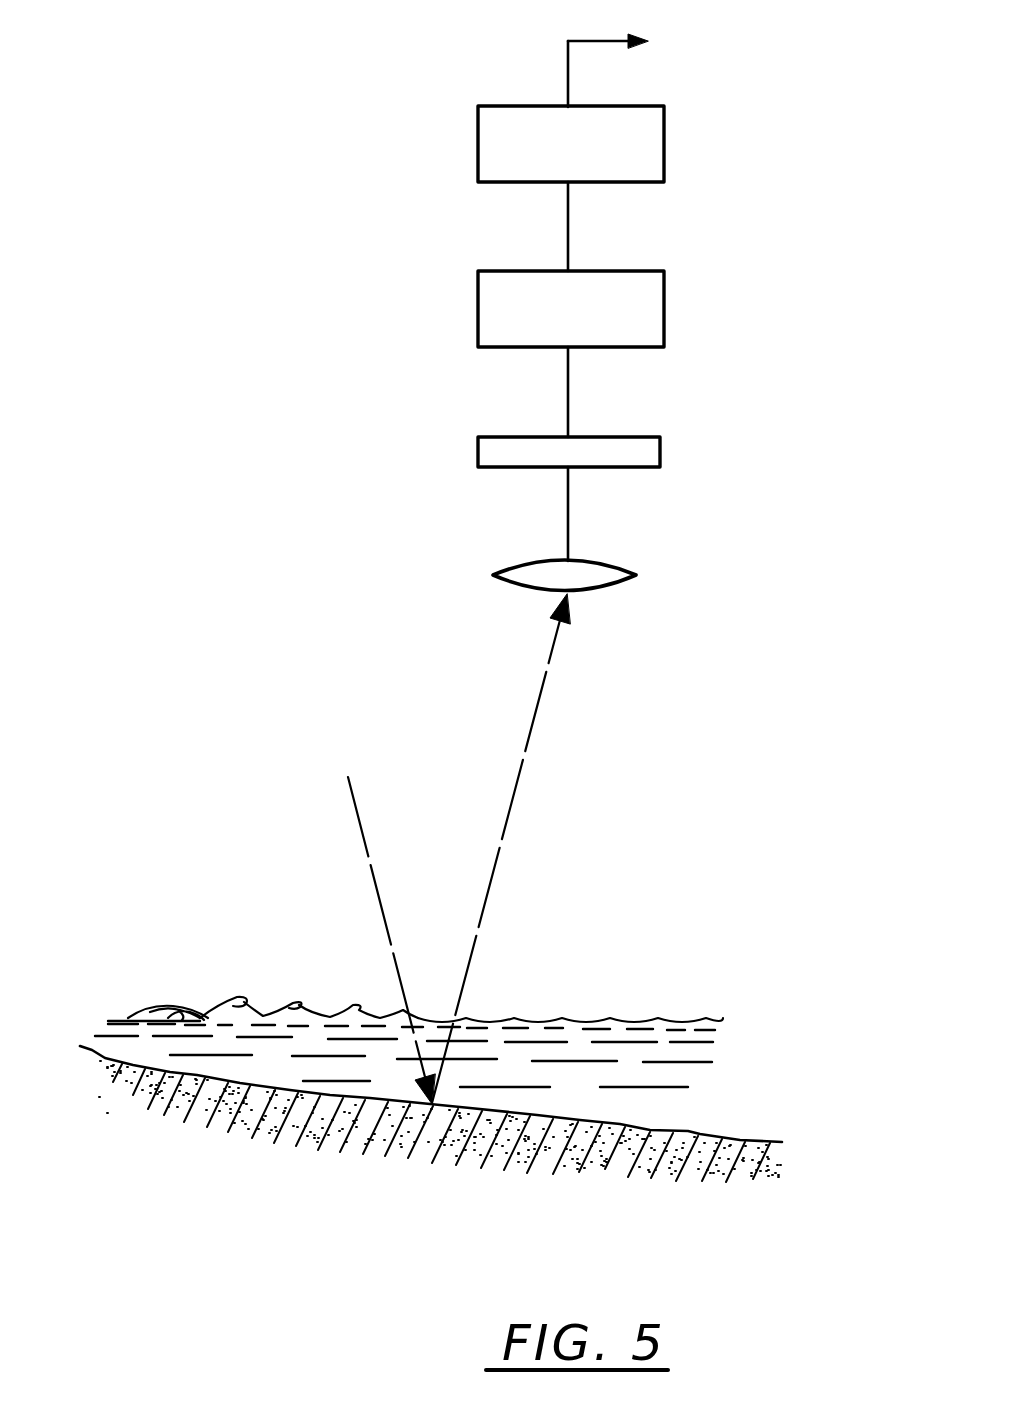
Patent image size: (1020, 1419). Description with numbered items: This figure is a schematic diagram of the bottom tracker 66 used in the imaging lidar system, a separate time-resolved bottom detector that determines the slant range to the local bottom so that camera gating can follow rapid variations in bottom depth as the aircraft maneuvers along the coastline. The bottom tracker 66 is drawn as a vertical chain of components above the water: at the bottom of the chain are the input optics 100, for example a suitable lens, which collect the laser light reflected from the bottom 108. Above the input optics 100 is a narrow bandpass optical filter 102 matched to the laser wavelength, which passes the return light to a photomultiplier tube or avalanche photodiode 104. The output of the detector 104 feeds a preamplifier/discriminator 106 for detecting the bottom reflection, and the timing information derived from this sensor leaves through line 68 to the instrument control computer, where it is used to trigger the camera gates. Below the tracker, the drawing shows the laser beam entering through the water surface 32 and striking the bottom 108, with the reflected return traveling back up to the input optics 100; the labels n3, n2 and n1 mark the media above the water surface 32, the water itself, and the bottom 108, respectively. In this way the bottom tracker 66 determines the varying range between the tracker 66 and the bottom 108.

The bottom tracker 66 is at (392, 238).
The line 68 is at (603, 40).
The preamplifier/discriminator 106 is at (664, 144).
The photomultiplier tube or avalanche photodiode 104 is at (664, 304).
The narrow bandpass optical filter 102 is at (660, 452).
The input optics 100 is at (633, 574).
The water surface 32 is at (640, 1117).
The bottom 108 is at (382, 1178).
The refractive index of sea bottom n1 is at (809, 1136).
The refractive index of water n2 is at (754, 1022).
The refractive index of air n3 is at (349, 935).